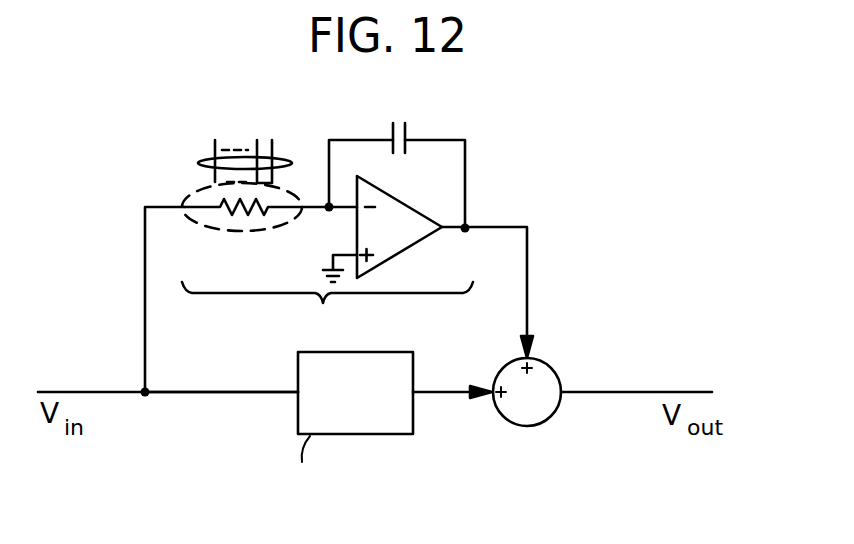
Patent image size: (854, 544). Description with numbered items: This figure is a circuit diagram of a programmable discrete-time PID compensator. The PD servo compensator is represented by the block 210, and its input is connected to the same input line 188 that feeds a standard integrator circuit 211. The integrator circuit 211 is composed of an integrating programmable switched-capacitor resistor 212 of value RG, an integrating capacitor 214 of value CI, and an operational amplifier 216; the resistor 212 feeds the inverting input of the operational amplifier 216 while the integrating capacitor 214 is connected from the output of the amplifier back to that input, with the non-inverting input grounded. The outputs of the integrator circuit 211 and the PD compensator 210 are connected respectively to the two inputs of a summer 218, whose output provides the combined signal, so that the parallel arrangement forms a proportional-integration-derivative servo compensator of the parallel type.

The input signal line 188 is at (275, 388).
The PD servo compensator 210 is at (383, 403).
The integrator circuit 211 is at (327, 310).
The integrating programmable switched-capacitor resistor 212 is at (213, 228).
The integrating capacitor 214 is at (396, 127).
The operational amplifier 216 is at (405, 242).
The summer 218 is at (505, 362).